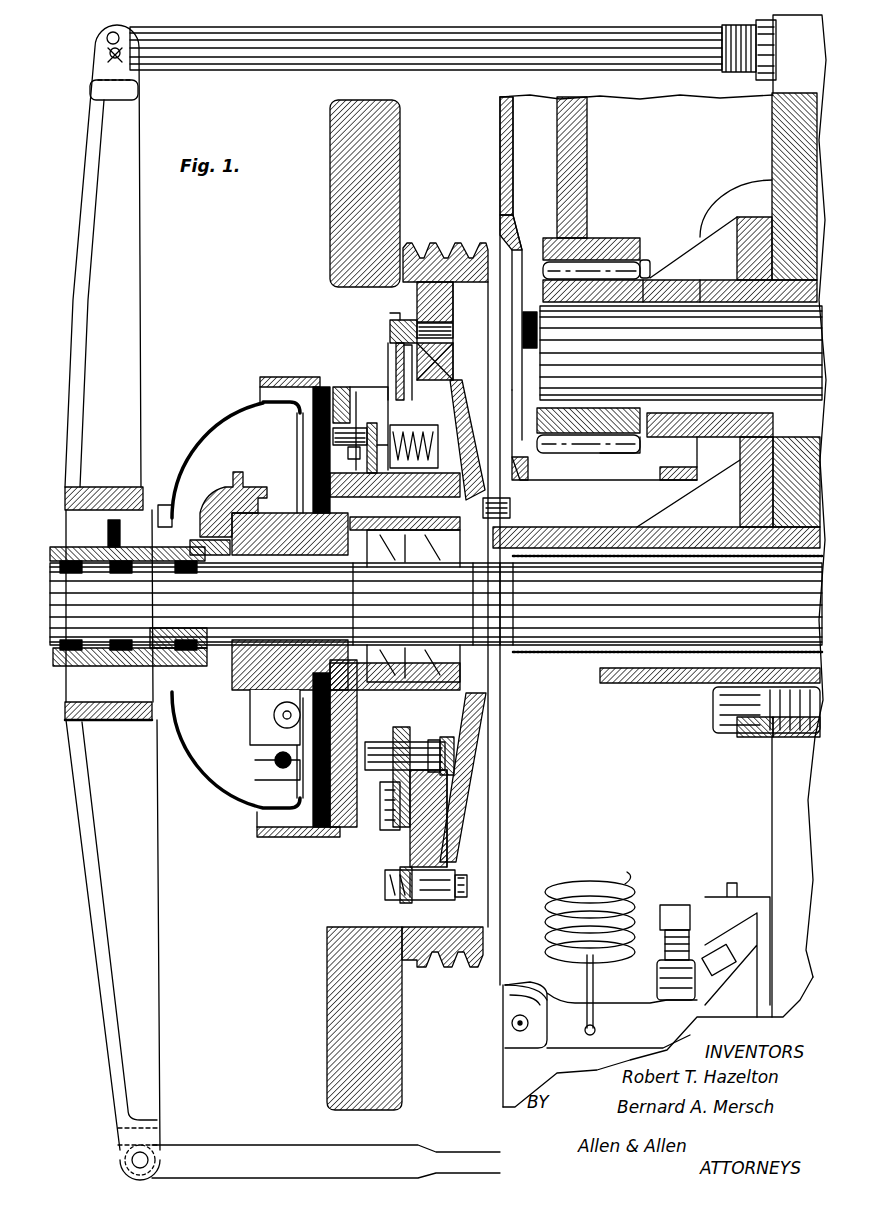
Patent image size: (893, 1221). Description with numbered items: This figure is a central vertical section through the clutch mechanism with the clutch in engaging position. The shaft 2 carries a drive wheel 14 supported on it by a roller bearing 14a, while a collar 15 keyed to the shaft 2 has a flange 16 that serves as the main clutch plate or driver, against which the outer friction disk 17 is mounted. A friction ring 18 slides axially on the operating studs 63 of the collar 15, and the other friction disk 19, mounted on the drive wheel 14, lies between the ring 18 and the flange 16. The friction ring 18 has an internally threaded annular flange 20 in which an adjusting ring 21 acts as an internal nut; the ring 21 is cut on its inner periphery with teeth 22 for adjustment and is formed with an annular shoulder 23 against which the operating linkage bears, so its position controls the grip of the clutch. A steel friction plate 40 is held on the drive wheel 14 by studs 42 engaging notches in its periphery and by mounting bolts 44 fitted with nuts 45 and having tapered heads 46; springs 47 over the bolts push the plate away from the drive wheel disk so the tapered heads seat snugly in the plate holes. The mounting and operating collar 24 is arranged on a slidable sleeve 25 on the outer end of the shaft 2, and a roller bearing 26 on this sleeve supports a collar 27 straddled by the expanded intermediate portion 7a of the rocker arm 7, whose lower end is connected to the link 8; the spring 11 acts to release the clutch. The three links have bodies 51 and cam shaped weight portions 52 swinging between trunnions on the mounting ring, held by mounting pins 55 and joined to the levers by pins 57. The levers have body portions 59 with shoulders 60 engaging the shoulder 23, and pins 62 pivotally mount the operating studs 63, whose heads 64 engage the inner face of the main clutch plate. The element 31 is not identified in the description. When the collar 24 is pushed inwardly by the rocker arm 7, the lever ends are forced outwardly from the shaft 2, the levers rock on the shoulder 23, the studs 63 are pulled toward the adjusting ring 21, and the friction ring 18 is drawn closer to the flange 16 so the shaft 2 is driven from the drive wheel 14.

The shaft 2 is at (614, 614).
The rocker arm 7 is at (147, 398).
The intermediate portion 7a is at (106, 486).
The link 8 is at (228, 1152).
The spring 11 is at (630, 900).
The drive wheel 14 is at (388, 162).
The roller bearing 14a is at (511, 513).
The collar 15 is at (280, 512).
The flange 16 is at (443, 375).
The outer friction disk 17 is at (445, 340).
The friction ring 18 is at (378, 372).
The friction disk 19 is at (396, 352).
The internally threaded annular flange 20 is at (274, 376).
The adjusting ring 21 is at (336, 392).
The teeth 22 is at (349, 388).
The annular shoulder 23 is at (265, 401).
The mounting and operating collar 24 is at (207, 703).
The slidable sleeve 25 is at (121, 672).
The roller bearing 26 is at (74, 670).
The collar 27 is at (115, 543).
The pin 31 is at (347, 452).
The friction plate 40 is at (397, 320).
The studs 42 is at (390, 328).
The mounting bolts 44 is at (438, 930).
The nuts 45 is at (458, 868).
The tapered heads 46 is at (384, 883).
The springs 47 is at (405, 885).
The link bodies 51 is at (275, 724).
The cam shaped weight portions 52 is at (252, 735).
The mounting pins 55 is at (288, 696).
The pins 57 is at (278, 770).
The lever body portions 59 is at (298, 802).
The shoulders 60 is at (335, 795).
The pins 62 is at (488, 774).
The operating studs 63 is at (454, 750).
The stud heads 64 is at (440, 768).